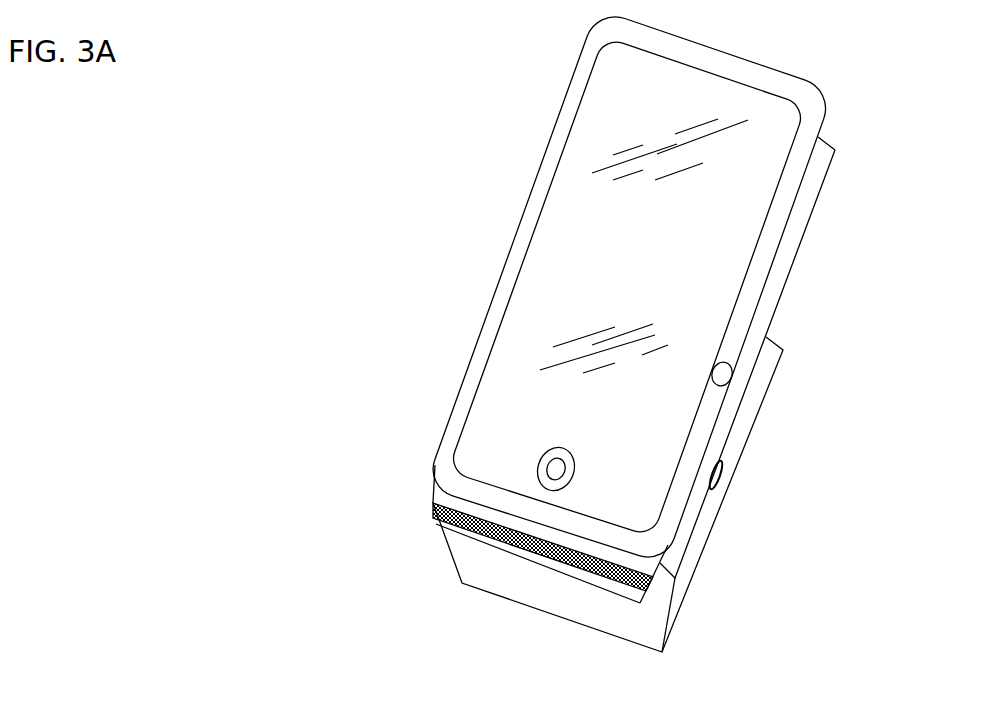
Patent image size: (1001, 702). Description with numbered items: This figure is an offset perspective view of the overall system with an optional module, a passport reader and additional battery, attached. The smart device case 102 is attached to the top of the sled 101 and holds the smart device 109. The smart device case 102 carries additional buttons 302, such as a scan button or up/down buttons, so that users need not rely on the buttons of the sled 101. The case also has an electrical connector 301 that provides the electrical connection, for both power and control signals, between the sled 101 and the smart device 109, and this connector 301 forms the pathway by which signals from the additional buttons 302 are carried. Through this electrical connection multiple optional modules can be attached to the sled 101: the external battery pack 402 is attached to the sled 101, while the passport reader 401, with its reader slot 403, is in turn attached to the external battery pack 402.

The sled 101 is at (802, 222).
The smart device case 102 is at (822, 97).
The smart device 109 is at (613, 96).
The connector 301 is at (757, 307).
The additional buttons 302 is at (733, 375).
The passport reader 401 is at (673, 603).
The external battery pack 402 is at (718, 488).
The reader slot 403 is at (432, 503).